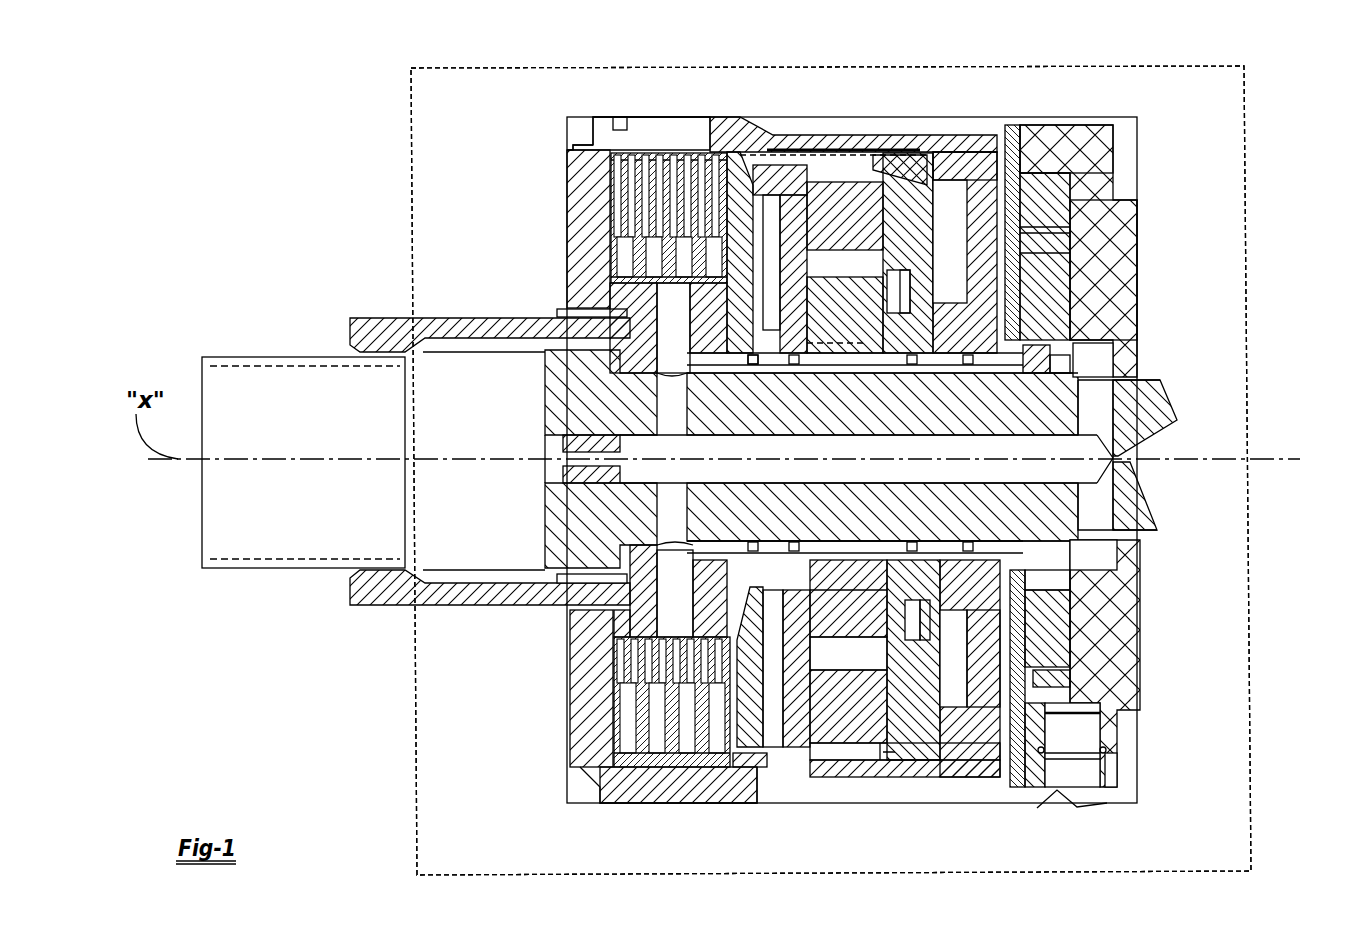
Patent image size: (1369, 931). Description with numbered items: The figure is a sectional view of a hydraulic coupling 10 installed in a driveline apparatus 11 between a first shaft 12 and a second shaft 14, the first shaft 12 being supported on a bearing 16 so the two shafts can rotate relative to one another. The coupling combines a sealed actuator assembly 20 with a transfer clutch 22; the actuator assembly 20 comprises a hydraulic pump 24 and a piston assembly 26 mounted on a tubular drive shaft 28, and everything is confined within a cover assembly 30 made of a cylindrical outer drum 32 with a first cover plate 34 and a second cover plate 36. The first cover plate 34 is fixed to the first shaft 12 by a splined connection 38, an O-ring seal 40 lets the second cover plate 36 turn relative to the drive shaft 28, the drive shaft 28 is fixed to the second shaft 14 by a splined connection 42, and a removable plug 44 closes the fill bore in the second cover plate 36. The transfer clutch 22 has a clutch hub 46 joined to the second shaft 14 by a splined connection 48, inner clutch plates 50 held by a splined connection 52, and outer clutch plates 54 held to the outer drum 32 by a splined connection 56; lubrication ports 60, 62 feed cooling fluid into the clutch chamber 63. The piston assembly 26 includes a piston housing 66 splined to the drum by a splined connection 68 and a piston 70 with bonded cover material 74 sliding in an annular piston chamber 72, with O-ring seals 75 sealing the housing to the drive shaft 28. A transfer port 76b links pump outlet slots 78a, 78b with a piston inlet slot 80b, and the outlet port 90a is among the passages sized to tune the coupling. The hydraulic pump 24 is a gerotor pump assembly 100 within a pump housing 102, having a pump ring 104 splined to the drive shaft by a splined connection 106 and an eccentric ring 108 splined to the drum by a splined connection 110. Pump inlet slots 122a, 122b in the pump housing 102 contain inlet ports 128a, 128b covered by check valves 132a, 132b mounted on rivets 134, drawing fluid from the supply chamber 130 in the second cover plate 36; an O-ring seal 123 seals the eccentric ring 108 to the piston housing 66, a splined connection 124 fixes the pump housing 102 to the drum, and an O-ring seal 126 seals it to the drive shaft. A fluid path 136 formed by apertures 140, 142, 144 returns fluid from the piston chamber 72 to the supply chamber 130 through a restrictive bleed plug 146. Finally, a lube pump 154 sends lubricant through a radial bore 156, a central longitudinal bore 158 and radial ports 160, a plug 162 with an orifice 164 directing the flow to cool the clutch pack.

The hydraulic coupling 10 is at (526, 134).
The driveline apparatus 11 is at (1250, 62).
The first shaft 12 is at (355, 322).
The second shaft 14 is at (1074, 395).
The bearing 16 is at (572, 597).
The actuator assembly 20 is at (843, 782).
The transfer clutch 22 is at (676, 174).
The hydraulic pump 24 is at (883, 760).
The piston assembly 26 is at (759, 580).
The tubular drive shaft 28 is at (1130, 465).
The cover assembly 30 is at (610, 119).
The cylindrical outer drum 32 is at (996, 760).
The first cover plate 34 is at (582, 208).
The second cover plate 36 is at (1105, 769).
The splined connection 38 is at (560, 313).
The O-ring seal 40 is at (991, 358).
The splined connection 42 is at (745, 544).
The removable plug 44 is at (986, 675).
The clutch hub 46 is at (616, 661).
The splined connection 48 is at (575, 580).
The inner clutch plates 50 is at (630, 256).
The splined connection 52 is at (630, 280).
The outer clutch plates 54 is at (627, 176).
The splined connection 56 is at (625, 150).
The lubrication port 60 is at (731, 686).
The lubrication port 62 is at (627, 130).
The clutch chamber 63 is at (732, 261).
The piston housing 66 is at (646, 626).
The splined connection 68 is at (805, 758).
The piston 70 is at (688, 638).
The piston chamber 72 is at (781, 751).
The cover material 74 is at (755, 691).
The O-ring seals 75 is at (670, 377).
The transfer port 76b is at (753, 365).
The pump outlet slot 78a is at (811, 588).
The pump outlet slot 78b is at (821, 343).
The piston inlet slot 80b is at (776, 200).
The outlet port 90a is at (799, 648).
The gerotor pump assembly 100 is at (897, 712).
The pump housing 102 is at (954, 205).
The pump ring 104 is at (1026, 596).
The splined connection 106 is at (910, 365).
The eccentric ring 108 is at (1025, 172).
The splined connection 110 is at (859, 148).
The pump inlet slot 122a is at (879, 631).
The pump inlet slot 122b is at (853, 215).
The O-ring seal 123 is at (819, 758).
The splined connection 124 is at (895, 175).
The O-ring seal 126 is at (966, 365).
The inlet port 128a is at (919, 631).
The inlet port 128b is at (910, 278).
The supply chamber 130 is at (1068, 194).
The check valve 132a is at (959, 694).
The check valve 132b is at (910, 305).
The rivets 134 is at (905, 621).
The fluid path 136 is at (1064, 173).
The aperture 140 is at (943, 228).
The aperture 142 is at (838, 181).
The aperture 144 is at (845, 267).
The bleed plug 146 is at (765, 166).
The lube pump 154 is at (1060, 183).
The radial bore 156 is at (1100, 508).
The central longitudinal bore 158 is at (1018, 475).
The radial ports 160 is at (666, 415).
The plug 162 is at (566, 488).
The orifice 164 is at (548, 459).